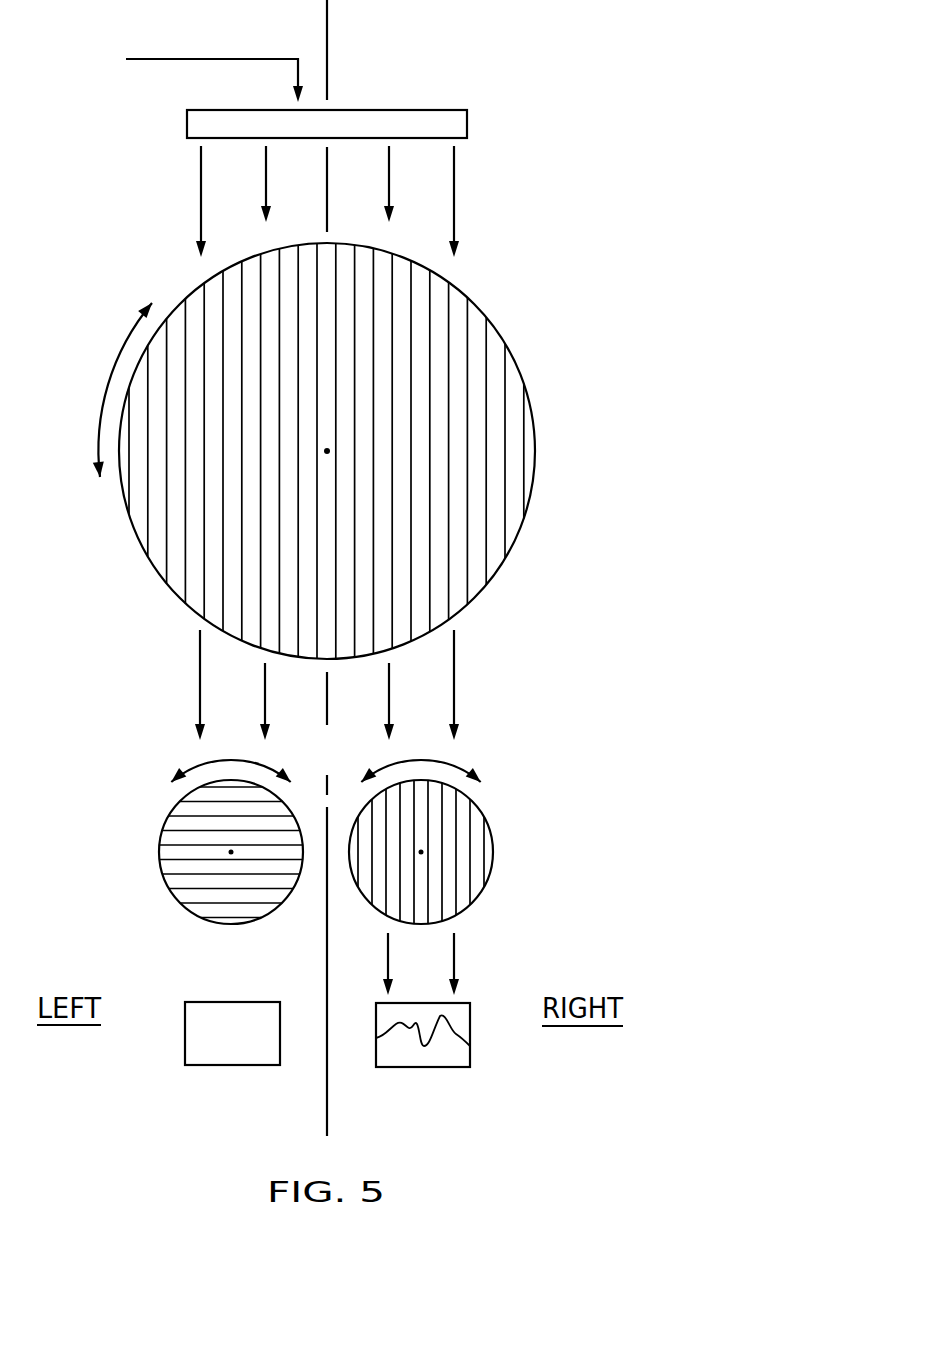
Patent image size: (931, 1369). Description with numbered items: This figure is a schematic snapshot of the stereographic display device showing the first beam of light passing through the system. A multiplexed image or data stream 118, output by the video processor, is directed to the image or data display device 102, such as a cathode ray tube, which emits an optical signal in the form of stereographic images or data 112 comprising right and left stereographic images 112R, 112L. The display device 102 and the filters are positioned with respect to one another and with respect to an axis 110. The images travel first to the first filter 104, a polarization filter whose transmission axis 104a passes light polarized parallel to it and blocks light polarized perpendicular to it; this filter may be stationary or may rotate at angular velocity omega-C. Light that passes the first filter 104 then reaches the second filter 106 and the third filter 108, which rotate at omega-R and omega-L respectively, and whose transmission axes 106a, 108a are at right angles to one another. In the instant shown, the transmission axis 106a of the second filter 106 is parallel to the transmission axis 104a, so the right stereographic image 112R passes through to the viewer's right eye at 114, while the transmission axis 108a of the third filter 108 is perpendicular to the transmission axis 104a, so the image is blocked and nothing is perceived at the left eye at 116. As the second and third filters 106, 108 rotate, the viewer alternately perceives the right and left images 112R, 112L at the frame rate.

The image or data display device 102 is at (467, 128).
The first filter 104 is at (515, 368).
The transmission axis of the first filter 104a is at (505, 456).
The second filter 106 is at (487, 822).
The transmission axis of the second filter 106a is at (470, 863).
The third filter 108 is at (166, 820).
The transmission axis of the third filter 108a is at (183, 862).
The axis 110 is at (327, 1113).
The stereographic images or data 112 is at (200, 668).
The right stereographic image or data 112R is at (454, 197).
The left stereographic image or data 112L is at (201, 210).
The right eye 114 is at (455, 1035).
The left eye 116 is at (198, 1067).
The multiplexed image or data stream 118 is at (126, 59).